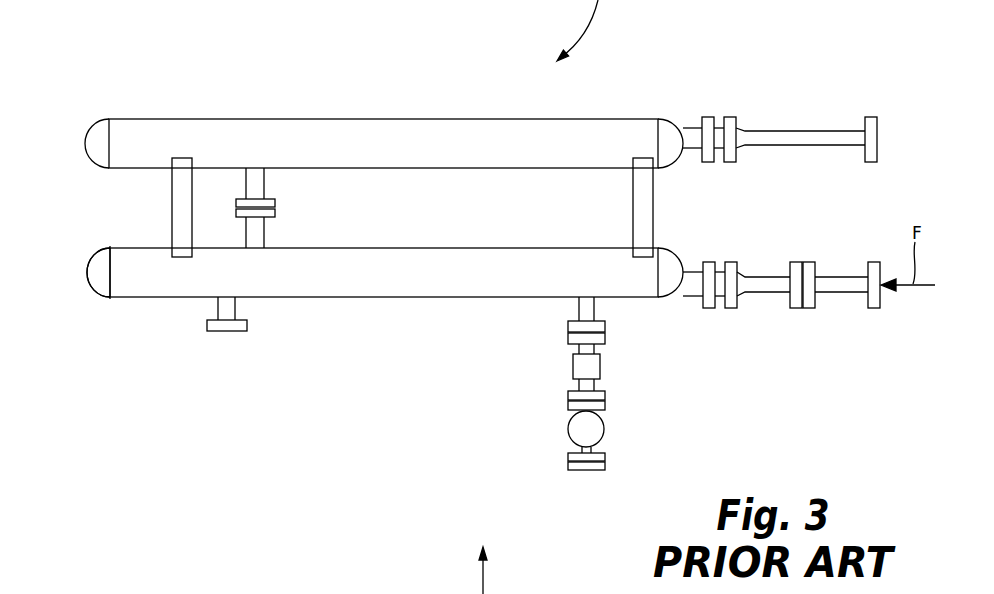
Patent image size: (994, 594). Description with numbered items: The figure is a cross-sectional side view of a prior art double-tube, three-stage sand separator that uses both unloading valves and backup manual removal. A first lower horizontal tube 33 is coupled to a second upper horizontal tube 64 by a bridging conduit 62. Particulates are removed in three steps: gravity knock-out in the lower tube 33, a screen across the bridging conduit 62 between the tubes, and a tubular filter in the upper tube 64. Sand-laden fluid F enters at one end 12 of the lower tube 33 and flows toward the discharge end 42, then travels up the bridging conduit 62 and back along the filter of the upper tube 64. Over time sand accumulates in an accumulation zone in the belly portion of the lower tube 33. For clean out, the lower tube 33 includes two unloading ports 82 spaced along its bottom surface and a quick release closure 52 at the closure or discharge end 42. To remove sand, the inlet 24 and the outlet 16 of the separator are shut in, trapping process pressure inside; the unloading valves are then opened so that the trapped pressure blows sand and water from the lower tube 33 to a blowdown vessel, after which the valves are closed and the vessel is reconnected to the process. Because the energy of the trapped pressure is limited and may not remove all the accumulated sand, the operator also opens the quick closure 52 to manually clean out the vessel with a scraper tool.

The end of the lower tube 12 is at (678, 253).
The outlet 16 is at (793, 131).
The inlet 24 is at (685, 298).
The first lower horizontal tube 33 is at (310, 298).
The discharge end 42 is at (87, 275).
The quick release closure 52 is at (95, 272).
The bridging conduit 62 is at (252, 186).
The second upper horizontal tube 64 is at (445, 119).
The unloading ports 82 is at (217, 313).